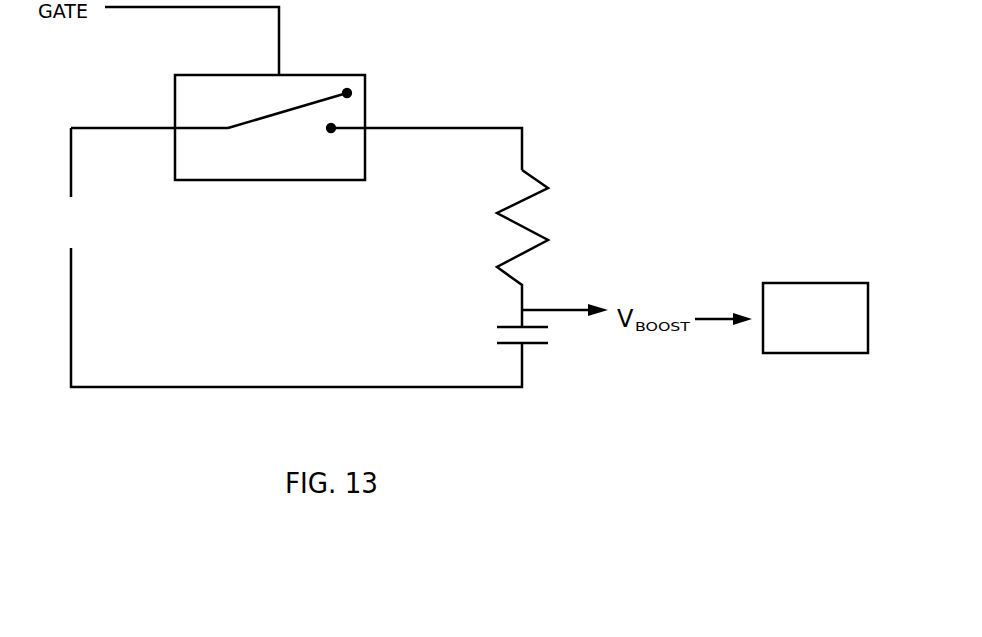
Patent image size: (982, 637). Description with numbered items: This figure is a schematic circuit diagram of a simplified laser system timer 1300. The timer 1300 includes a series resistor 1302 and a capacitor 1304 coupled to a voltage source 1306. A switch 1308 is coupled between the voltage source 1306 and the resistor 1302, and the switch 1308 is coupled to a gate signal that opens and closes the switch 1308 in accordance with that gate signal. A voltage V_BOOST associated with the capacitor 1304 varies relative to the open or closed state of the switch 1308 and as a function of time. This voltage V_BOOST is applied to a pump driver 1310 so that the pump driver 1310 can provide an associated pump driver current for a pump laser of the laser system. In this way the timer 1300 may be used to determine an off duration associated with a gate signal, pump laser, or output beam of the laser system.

The timer 1300 is at (640, 505).
The series resistor 1302 is at (575, 214).
The capacitor 1304 is at (488, 333).
The voltage source 1306 is at (80, 222).
The switch 1308 is at (313, 74).
The pump driver 1310 is at (835, 353).